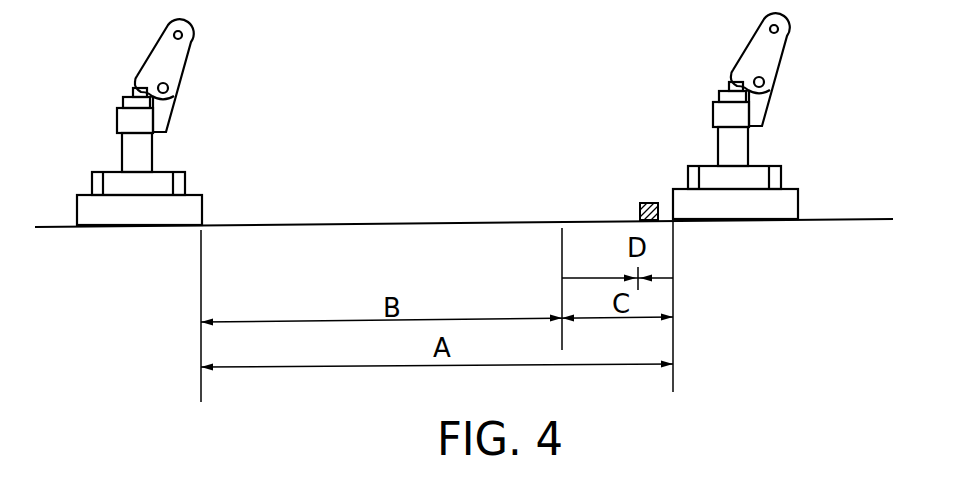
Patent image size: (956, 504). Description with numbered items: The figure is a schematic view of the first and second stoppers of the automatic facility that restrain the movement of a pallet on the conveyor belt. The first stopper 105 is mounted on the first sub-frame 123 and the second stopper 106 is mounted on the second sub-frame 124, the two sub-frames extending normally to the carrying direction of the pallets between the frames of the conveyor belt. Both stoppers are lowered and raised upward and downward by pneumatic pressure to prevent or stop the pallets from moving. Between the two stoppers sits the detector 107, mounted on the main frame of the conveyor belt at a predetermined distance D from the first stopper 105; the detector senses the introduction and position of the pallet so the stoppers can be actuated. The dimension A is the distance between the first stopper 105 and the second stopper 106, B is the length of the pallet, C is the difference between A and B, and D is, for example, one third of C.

The first stopper 105 is at (742, 68).
The second stopper 106 is at (145, 75).
The detector 107 is at (652, 201).
The first sub-frame 123 is at (787, 203).
The second sub-frame 124 is at (192, 208).